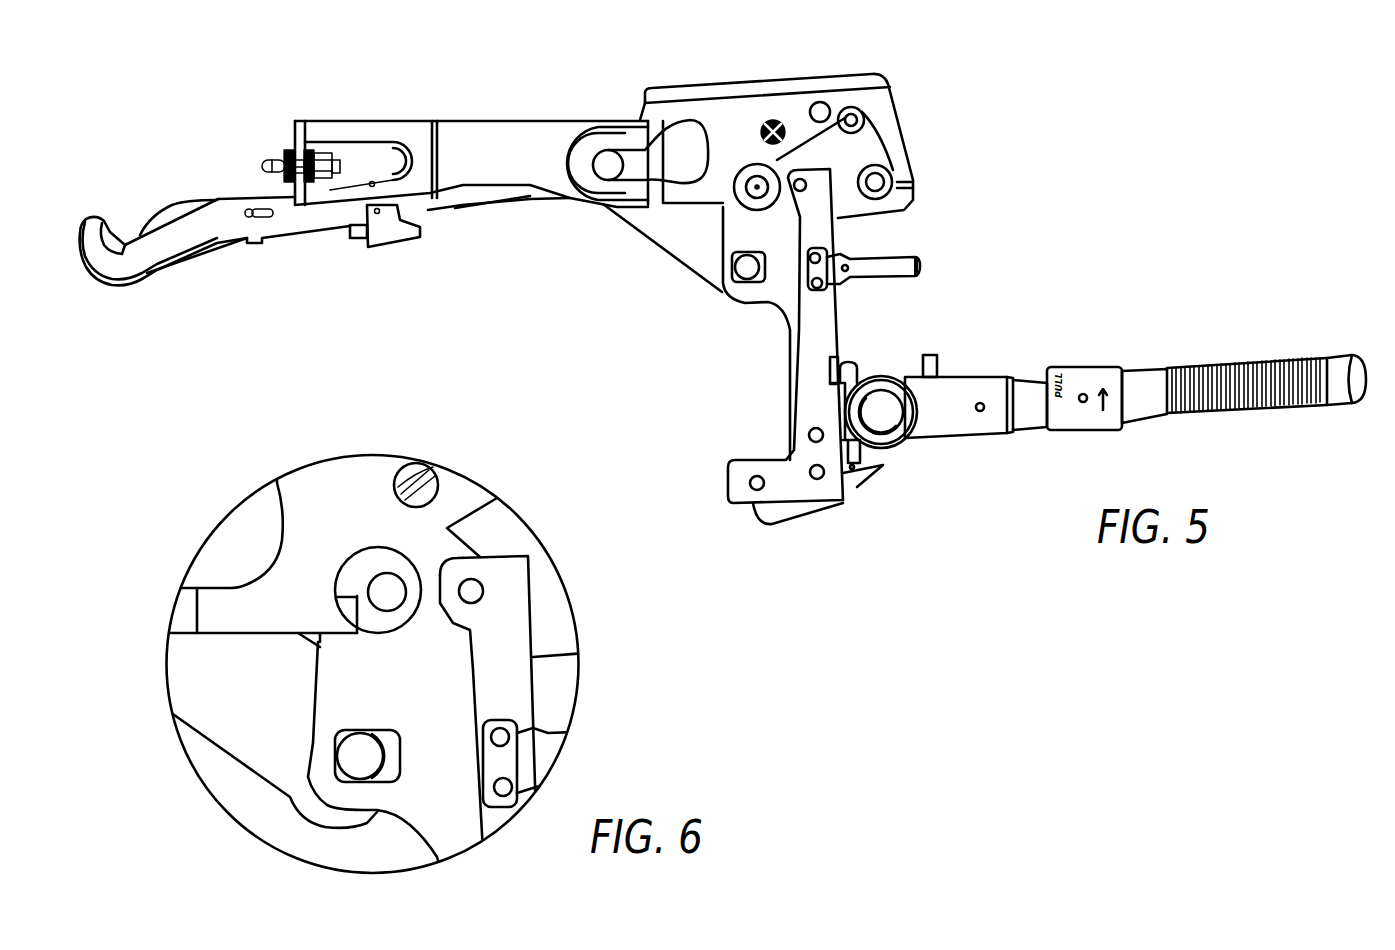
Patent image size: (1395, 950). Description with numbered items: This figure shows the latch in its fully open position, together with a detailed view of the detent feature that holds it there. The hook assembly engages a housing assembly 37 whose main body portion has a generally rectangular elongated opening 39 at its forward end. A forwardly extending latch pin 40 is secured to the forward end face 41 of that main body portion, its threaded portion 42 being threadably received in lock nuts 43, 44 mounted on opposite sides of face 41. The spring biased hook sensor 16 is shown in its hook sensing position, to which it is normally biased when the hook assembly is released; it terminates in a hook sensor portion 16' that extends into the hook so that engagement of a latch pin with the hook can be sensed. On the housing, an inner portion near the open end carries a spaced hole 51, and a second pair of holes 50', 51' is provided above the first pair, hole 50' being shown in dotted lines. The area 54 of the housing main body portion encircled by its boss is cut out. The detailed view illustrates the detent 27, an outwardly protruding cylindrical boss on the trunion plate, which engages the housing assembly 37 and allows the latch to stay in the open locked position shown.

In FIG. 5, the hook sensor 16 is at (423, 197).
In FIG. 5, the hook sensor portion 16' is at (143, 211).
In FIG. 6, the cylindrical boss (detent) 27 is at (390, 593).
In FIG. 5, the housing assembly 37 is at (687, 86).
In FIG. 6, the housing assembly 37 is at (338, 487).
In FIG. 5, the rectangular elongated opening 39 is at (403, 157).
In FIG. 5, the latch pin 40 is at (262, 160).
In FIG. 5, the forward end face 41 is at (293, 134).
In FIG. 5, the threaded portion 42 is at (333, 160).
In FIG. 5, the lock nut 43 is at (290, 186).
In FIG. 5, the lock nut 44 is at (310, 187).
In FIG. 5, the hole 50' is at (866, 74).
In FIG. 5, the hole 51 is at (936, 184).
In FIG. 5, the hole 51' is at (920, 111).
In FIG. 6, the cut-out area 54 is at (280, 607).